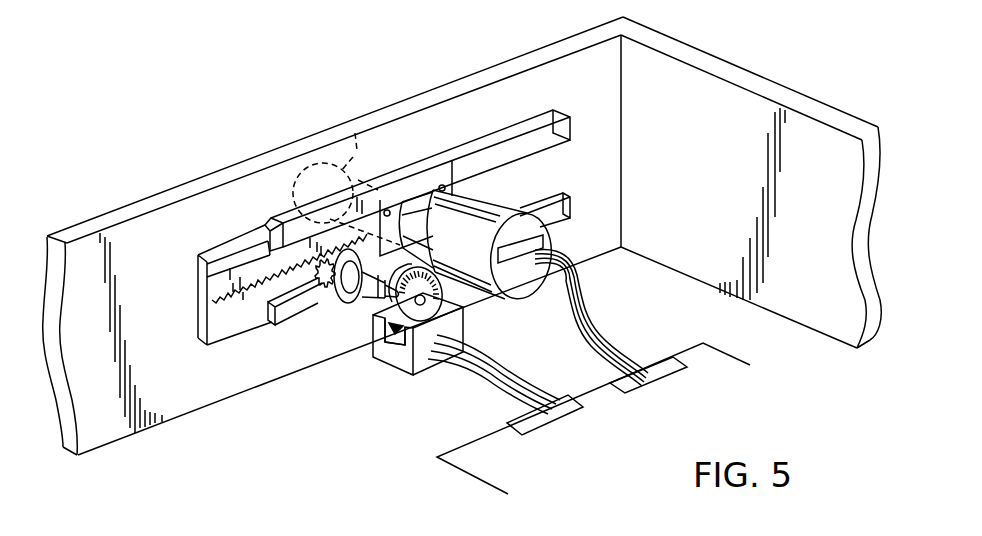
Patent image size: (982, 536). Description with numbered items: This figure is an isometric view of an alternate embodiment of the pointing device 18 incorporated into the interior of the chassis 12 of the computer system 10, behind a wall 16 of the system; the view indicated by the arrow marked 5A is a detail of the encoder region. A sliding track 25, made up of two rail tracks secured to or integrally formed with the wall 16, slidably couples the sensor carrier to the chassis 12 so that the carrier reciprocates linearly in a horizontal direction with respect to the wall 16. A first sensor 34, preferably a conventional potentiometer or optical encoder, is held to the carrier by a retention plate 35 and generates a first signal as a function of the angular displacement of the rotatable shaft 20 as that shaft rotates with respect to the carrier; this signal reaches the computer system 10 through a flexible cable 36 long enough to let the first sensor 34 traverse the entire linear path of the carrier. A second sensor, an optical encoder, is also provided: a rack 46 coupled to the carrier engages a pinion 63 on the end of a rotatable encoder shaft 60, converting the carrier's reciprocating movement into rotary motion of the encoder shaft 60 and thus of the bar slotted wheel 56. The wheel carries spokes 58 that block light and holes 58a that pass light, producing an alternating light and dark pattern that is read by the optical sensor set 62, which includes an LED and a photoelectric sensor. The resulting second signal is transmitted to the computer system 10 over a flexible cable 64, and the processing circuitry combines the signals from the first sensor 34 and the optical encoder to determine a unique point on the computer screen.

The computer system 10 is at (338, 58).
The chassis 12 is at (692, 38).
The wall 16 is at (218, 170).
The pointing device 18 is at (445, 125).
The rotatable shaft 20 is at (352, 128).
The sliding track 25 is at (567, 125).
The first sensor 34 is at (495, 200).
The retention plate 35 is at (397, 212).
The flexible cable 36 is at (587, 295).
The rack 46 is at (247, 292).
The bar slotted wheel 56 is at (445, 296).
The spokes 58 is at (390, 320).
The holes 58a is at (420, 345).
The rotatable encoder shaft 60 is at (387, 295).
The optical sensor set 62 is at (385, 370).
The pinion 63 is at (277, 306).
The flexible cable 64 is at (500, 380).
The section view arrow 5A is at (360, 372).